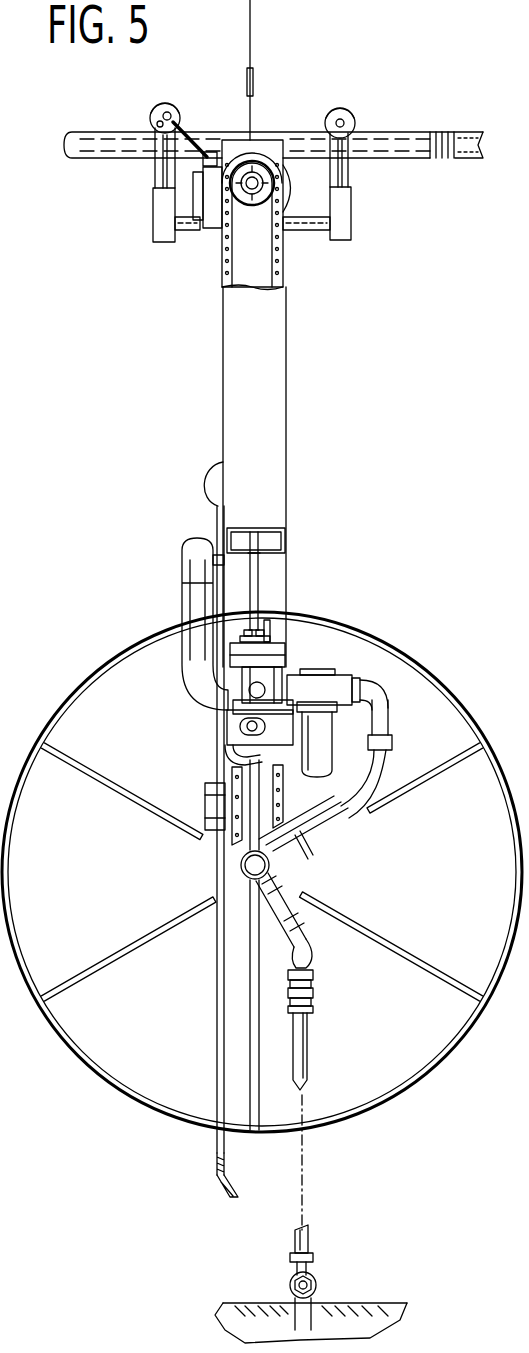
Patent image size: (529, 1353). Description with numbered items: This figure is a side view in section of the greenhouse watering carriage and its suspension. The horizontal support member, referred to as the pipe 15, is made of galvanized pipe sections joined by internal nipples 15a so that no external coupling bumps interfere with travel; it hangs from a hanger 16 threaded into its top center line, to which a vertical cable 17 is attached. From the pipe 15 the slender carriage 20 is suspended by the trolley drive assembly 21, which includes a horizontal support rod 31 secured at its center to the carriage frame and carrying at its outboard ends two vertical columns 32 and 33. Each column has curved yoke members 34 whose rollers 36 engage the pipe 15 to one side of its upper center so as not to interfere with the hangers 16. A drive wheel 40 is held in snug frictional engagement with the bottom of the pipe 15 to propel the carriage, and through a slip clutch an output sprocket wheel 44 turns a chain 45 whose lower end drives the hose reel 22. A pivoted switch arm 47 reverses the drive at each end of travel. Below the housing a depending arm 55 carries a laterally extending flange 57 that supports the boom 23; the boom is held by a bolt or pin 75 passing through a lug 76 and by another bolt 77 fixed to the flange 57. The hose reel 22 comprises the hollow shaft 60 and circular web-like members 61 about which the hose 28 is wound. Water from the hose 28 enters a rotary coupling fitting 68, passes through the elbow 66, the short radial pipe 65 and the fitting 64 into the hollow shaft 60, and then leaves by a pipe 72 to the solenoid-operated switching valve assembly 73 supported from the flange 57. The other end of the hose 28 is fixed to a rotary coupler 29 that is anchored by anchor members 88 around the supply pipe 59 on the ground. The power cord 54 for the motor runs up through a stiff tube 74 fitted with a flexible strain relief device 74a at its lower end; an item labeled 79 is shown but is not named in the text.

The horizontal support member 15 is at (100, 132).
The internal nipples 15a is at (450, 132).
The hanger 16 is at (252, 90).
The vertical cable 17 is at (250, 32).
The carriage 20 is at (209, 410).
The trolley drive assembly 21 is at (312, 249).
The hose reel 22 is at (462, 683).
The boom 23 is at (270, 625).
The hose 28 is at (308, 1062).
The rotary coupler 29 is at (312, 1280).
The horizontal support rod 31 is at (190, 232).
The vertical column 32 is at (351, 220).
The vertical column 33 is at (153, 228).
The curved yoke member 34 is at (155, 165).
The roller 36 is at (165, 103).
The drive wheel 40 is at (285, 186).
The output sprocket wheel 44 is at (245, 202).
The chain 45 is at (287, 285).
The switch arm 47 is at (183, 133).
The power cord 54 is at (235, 1197).
The depending arm 55 is at (222, 765).
The flange 57 is at (268, 640).
The supply pipe 59 is at (290, 1290).
The hollow hose reel shaft 60 is at (242, 860).
The circular web-like member 61 is at (398, 948).
The fitting 64 is at (270, 885).
The radial pipe 65 is at (295, 918).
The elbow 66 is at (312, 948).
The rotary coupling fitting 68 is at (312, 968).
The pipe 72 is at (355, 812).
The switching valve assembly 73 is at (340, 682).
The stiff tube 74 is at (220, 985).
The strain relief device 74a is at (220, 1182).
The bolt or pin 75 is at (258, 585).
The lug 76 is at (287, 528).
The bolt 77 is at (285, 656).
The standpipe 79 is at (183, 597).
The anchor member 88 is at (325, 1303).